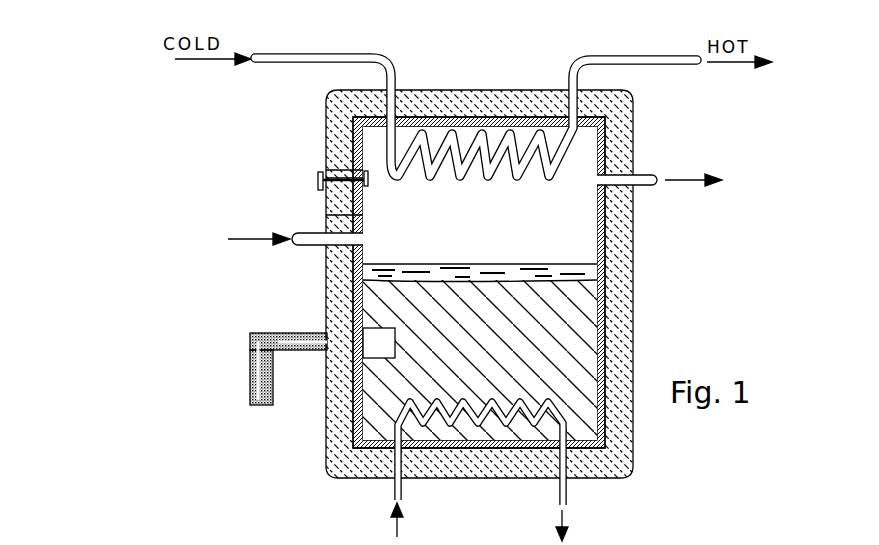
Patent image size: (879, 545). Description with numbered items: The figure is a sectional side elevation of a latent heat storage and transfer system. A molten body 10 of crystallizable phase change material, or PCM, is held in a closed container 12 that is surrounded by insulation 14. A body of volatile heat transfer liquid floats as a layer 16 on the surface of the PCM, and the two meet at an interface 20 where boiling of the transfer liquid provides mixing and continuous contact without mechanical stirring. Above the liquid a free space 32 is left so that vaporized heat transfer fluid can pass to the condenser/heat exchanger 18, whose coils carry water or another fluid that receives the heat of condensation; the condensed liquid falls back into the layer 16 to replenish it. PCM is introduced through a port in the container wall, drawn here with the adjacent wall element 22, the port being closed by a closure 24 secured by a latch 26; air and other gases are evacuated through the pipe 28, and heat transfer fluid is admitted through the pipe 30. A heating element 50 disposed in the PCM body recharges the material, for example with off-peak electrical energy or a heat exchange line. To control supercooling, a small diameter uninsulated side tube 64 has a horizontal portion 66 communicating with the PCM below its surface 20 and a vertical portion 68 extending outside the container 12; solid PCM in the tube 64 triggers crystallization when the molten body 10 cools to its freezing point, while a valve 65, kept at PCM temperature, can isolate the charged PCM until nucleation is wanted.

The molten body of PCM 10 is at (577, 323).
The closed container 12 is at (602, 240).
The insulation 14 is at (330, 408).
The layer of heat transfer liquid 16 is at (455, 264).
The condenser/heat exchanger 18 is at (540, 172).
The interface 20 is at (535, 280).
The plug 22 is at (358, 207).
The closure 24 is at (330, 172).
The latch 26 is at (368, 172).
The pipe 28 is at (638, 177).
The pipe 30 is at (292, 234).
The free space 32 is at (497, 205).
The heating element 50 is at (502, 402).
The side tube 64 is at (250, 338).
The valve 65 is at (410, 341).
The horizontal portion 66 is at (313, 350).
The vertical portion 68 is at (250, 396).